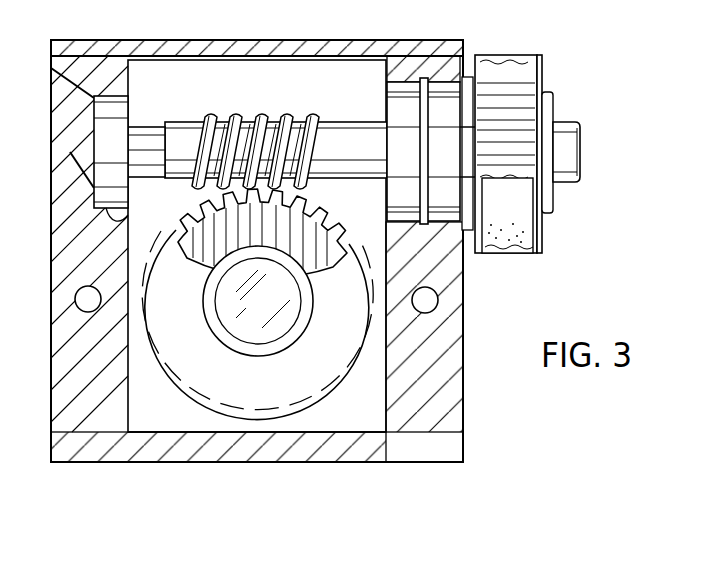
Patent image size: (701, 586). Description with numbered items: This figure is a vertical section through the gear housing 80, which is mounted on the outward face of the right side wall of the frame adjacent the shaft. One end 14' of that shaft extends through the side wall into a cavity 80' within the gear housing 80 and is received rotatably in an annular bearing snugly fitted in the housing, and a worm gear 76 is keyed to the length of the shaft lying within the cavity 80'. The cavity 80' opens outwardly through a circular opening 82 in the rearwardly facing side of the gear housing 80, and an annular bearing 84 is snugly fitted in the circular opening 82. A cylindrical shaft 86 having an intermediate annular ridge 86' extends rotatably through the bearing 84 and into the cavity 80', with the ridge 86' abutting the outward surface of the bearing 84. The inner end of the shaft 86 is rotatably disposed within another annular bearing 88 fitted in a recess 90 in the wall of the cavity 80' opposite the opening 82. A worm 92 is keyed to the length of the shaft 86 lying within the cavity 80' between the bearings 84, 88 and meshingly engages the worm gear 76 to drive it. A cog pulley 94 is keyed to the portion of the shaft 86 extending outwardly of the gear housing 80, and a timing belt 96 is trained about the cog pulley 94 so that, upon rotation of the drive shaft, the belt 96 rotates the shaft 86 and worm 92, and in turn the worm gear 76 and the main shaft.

The end of the shaft 14' is at (241, 301).
The worm gear 76 is at (313, 223).
The gear housing 80 is at (281, 251).
The cavity 80' is at (257, 472).
The circular opening 82 is at (443, 85).
The annular bearing 84 is at (398, 102).
The cylindrical shaft 86 is at (590, 151).
The intermediate annular ridge 86' is at (506, 205).
The annular bearing 88 is at (113, 111).
The recess 90 is at (112, 216).
The worm 92 is at (238, 118).
The cog pulley 94 is at (515, 92).
The timing belt 96 is at (523, 215).